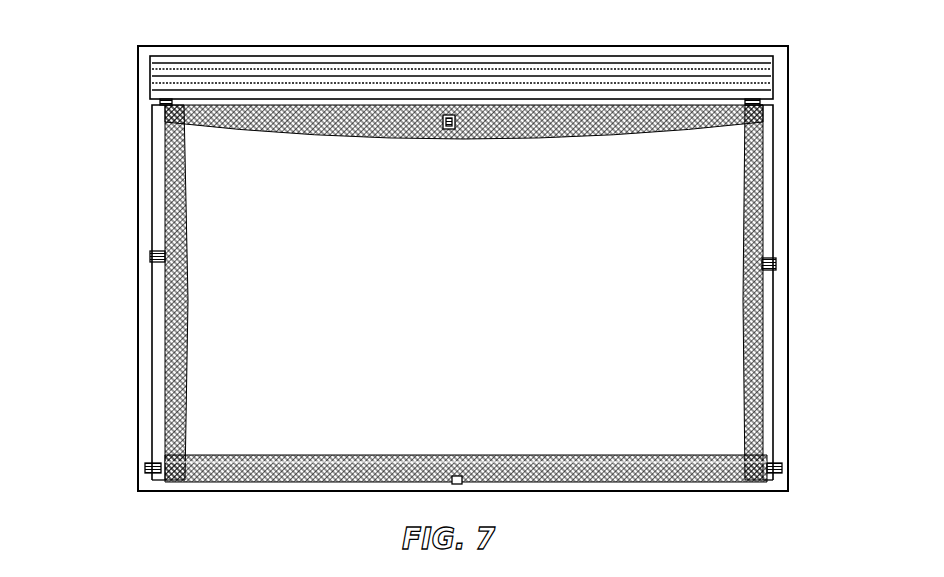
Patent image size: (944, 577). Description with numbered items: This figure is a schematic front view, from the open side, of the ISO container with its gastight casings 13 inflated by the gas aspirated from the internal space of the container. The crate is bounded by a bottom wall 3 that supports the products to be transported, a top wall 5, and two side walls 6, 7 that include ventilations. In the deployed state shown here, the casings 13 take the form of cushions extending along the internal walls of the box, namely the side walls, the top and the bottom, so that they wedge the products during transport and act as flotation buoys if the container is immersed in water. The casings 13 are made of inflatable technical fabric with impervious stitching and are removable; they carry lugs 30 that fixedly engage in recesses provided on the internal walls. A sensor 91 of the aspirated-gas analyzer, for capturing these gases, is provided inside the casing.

The bottom wall 3 is at (285, 485).
The top wall 5 is at (690, 52).
The side wall 6 is at (783, 204).
The side wall 7 is at (142, 355).
The gastight casing 13 is at (466, 327).
The lug 30 is at (142, 257).
The sensor 91 is at (450, 128).